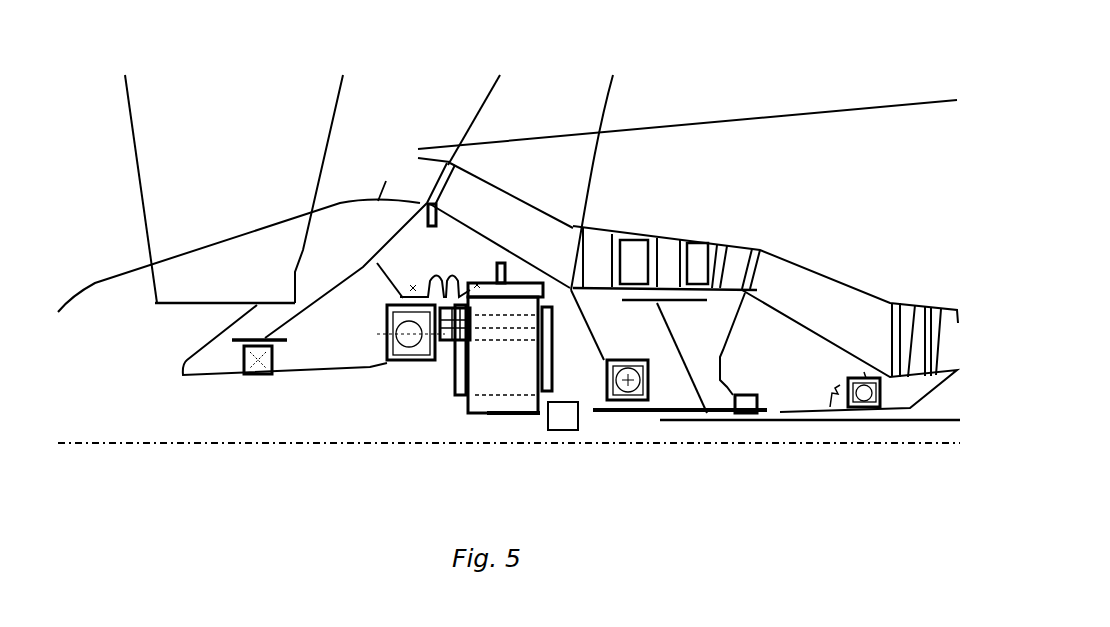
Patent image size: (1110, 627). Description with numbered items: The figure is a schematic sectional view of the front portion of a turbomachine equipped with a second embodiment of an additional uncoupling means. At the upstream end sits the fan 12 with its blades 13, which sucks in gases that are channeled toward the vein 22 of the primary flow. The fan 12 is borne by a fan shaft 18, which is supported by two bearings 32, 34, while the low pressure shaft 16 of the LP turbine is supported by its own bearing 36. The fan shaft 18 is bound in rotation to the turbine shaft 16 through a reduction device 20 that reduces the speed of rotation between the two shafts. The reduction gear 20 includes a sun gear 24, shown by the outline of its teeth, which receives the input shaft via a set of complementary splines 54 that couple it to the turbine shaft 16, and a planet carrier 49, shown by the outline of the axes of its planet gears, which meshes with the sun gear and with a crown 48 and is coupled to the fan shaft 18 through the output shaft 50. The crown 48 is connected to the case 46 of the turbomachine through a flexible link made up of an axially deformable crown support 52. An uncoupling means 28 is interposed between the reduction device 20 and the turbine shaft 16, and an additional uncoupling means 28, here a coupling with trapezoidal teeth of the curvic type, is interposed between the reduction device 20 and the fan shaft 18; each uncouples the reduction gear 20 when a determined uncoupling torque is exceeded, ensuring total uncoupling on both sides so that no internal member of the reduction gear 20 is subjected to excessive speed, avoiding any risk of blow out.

The fan 12 is at (168, 118).
The blades 13 is at (167, 184).
The low pressure shaft 16 is at (680, 414).
The fan shaft 18 is at (300, 372).
The reduction device 20 is at (502, 380).
The vein of a primary flow 22 is at (580, 252).
The sun gear 24 is at (510, 395).
The uncoupling means 28 is at (447, 350).
The bearing 32 is at (250, 368).
The bearing 34 is at (407, 343).
The bearing 36 is at (642, 387).
The case 46 is at (388, 278).
The crown 48 is at (507, 282).
The planet carrier 49 is at (518, 340).
The output shaft 50 is at (462, 380).
The crown support 52 is at (430, 280).
The set of complementary splines 54 is at (530, 414).